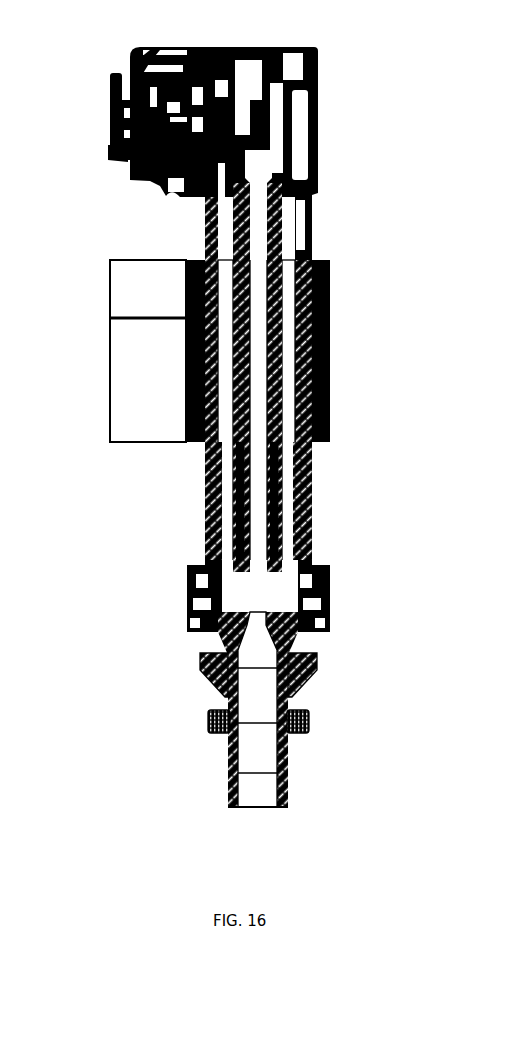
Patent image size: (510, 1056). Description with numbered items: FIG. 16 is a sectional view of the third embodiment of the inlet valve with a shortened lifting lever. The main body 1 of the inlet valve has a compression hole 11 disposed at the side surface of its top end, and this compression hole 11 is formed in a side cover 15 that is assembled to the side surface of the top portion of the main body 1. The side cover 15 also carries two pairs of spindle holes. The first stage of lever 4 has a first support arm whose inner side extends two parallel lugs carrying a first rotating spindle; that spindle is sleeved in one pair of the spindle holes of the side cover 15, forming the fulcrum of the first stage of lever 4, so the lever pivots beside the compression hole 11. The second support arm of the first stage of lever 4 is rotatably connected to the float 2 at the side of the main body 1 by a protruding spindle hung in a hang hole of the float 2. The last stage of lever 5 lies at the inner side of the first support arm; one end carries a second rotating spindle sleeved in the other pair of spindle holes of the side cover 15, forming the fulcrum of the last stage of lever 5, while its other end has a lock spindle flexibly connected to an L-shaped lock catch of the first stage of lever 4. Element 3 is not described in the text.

The main body of the inlet valve 1 is at (318, 193).
The float 2 is at (327, 330).
The push button 3 is at (128, 148).
The first stage of lever 4 is at (108, 119).
The last stage of lever 5 is at (110, 152).
The compression hole 11 is at (148, 172).
The side cover 15 is at (133, 71).